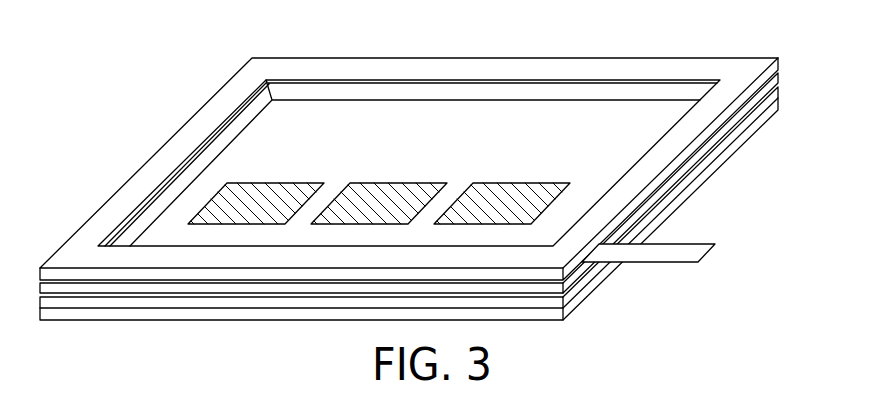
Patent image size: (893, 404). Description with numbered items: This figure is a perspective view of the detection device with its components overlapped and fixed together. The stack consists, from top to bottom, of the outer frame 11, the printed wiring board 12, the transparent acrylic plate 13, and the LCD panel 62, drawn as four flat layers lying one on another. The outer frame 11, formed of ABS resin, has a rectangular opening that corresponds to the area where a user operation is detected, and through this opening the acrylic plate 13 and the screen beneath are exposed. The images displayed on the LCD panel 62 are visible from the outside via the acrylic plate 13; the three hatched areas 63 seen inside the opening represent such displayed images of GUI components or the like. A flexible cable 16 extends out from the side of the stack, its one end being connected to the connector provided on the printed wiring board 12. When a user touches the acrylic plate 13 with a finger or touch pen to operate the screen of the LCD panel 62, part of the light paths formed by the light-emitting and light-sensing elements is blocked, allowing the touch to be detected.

The outer frame 11 is at (708, 66).
The printed wiring board 12 is at (781, 74).
The transparent acrylic plate 13 is at (730, 138).
The LCD panel 62 is at (698, 180).
The areas 63 is at (272, 190).
The flexible cable 16 is at (661, 257).